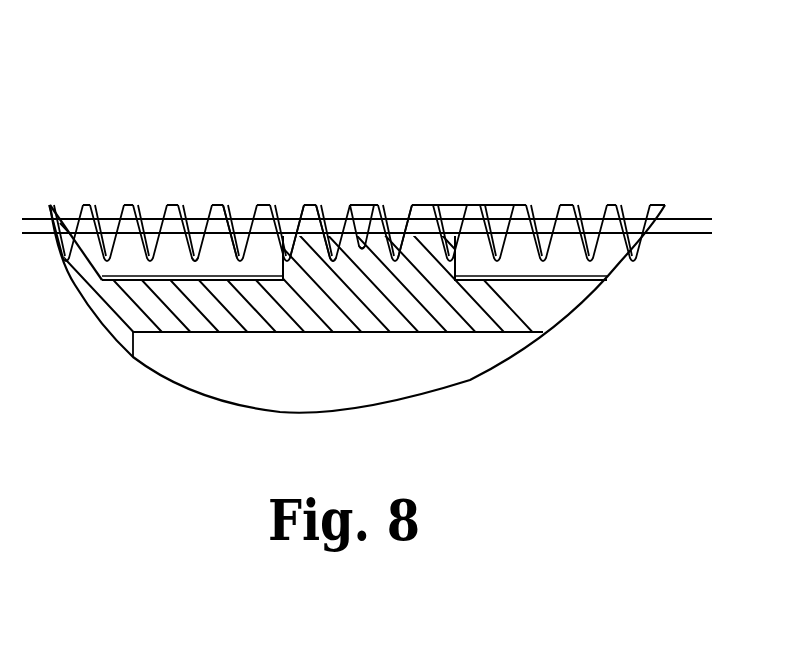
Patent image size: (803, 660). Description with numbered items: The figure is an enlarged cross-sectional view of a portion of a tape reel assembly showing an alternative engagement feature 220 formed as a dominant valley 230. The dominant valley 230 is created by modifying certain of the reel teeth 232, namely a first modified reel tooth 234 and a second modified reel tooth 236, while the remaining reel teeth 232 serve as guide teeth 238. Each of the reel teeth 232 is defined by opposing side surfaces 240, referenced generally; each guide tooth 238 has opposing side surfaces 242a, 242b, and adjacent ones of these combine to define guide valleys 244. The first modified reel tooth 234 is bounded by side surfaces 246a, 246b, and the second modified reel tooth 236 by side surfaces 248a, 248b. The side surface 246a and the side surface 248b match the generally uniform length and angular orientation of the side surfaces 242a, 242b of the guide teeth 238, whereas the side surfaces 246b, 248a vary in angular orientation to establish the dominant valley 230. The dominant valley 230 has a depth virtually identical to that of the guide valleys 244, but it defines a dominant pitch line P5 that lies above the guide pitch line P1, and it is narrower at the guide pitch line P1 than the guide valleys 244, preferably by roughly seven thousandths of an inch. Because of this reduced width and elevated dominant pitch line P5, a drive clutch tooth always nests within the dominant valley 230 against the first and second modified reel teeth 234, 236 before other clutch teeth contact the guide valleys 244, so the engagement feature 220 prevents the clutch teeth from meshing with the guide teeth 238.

The engagement feature 220 is at (379, 99).
The dominant valley 230 is at (373, 196).
The reel teeth 232 is at (259, 272).
The first modified reel tooth 234 is at (343, 262).
The second modified reel tooth 236 is at (390, 272).
The guide teeth 238 is at (240, 196).
The side surfaces 240 is at (203, 216).
The side surface 242a is at (456, 212).
The side surface 242b is at (488, 212).
The guide valleys 244 is at (462, 247).
The side surface 246a is at (347, 240).
The side surface 246b is at (348, 240).
The side surface 248a is at (370, 258).
The side surface 248b is at (402, 216).
The dominant pitch line P5 is at (691, 210).
The guide pitch line P1 is at (686, 236).